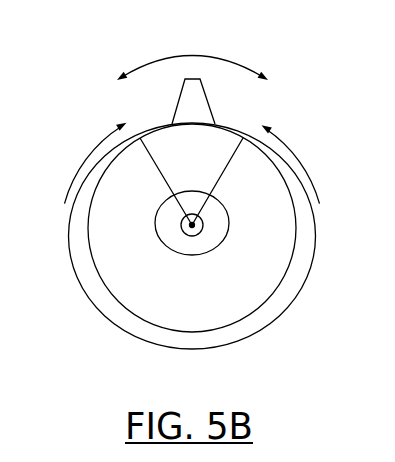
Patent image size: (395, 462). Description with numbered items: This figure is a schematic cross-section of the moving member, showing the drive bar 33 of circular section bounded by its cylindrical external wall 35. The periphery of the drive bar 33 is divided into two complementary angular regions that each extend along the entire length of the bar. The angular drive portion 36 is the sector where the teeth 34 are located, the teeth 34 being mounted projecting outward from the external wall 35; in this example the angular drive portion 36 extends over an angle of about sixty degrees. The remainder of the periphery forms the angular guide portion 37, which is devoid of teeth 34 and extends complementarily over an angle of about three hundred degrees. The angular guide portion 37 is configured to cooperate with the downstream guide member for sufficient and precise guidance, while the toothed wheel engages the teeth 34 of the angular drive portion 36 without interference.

The drive bar 33 is at (64, 109).
The teeth 34 is at (205, 93).
The external wall 35 is at (297, 238).
The angular drive portion 36 is at (192, 127).
The angular guide portion 37 is at (181, 254).